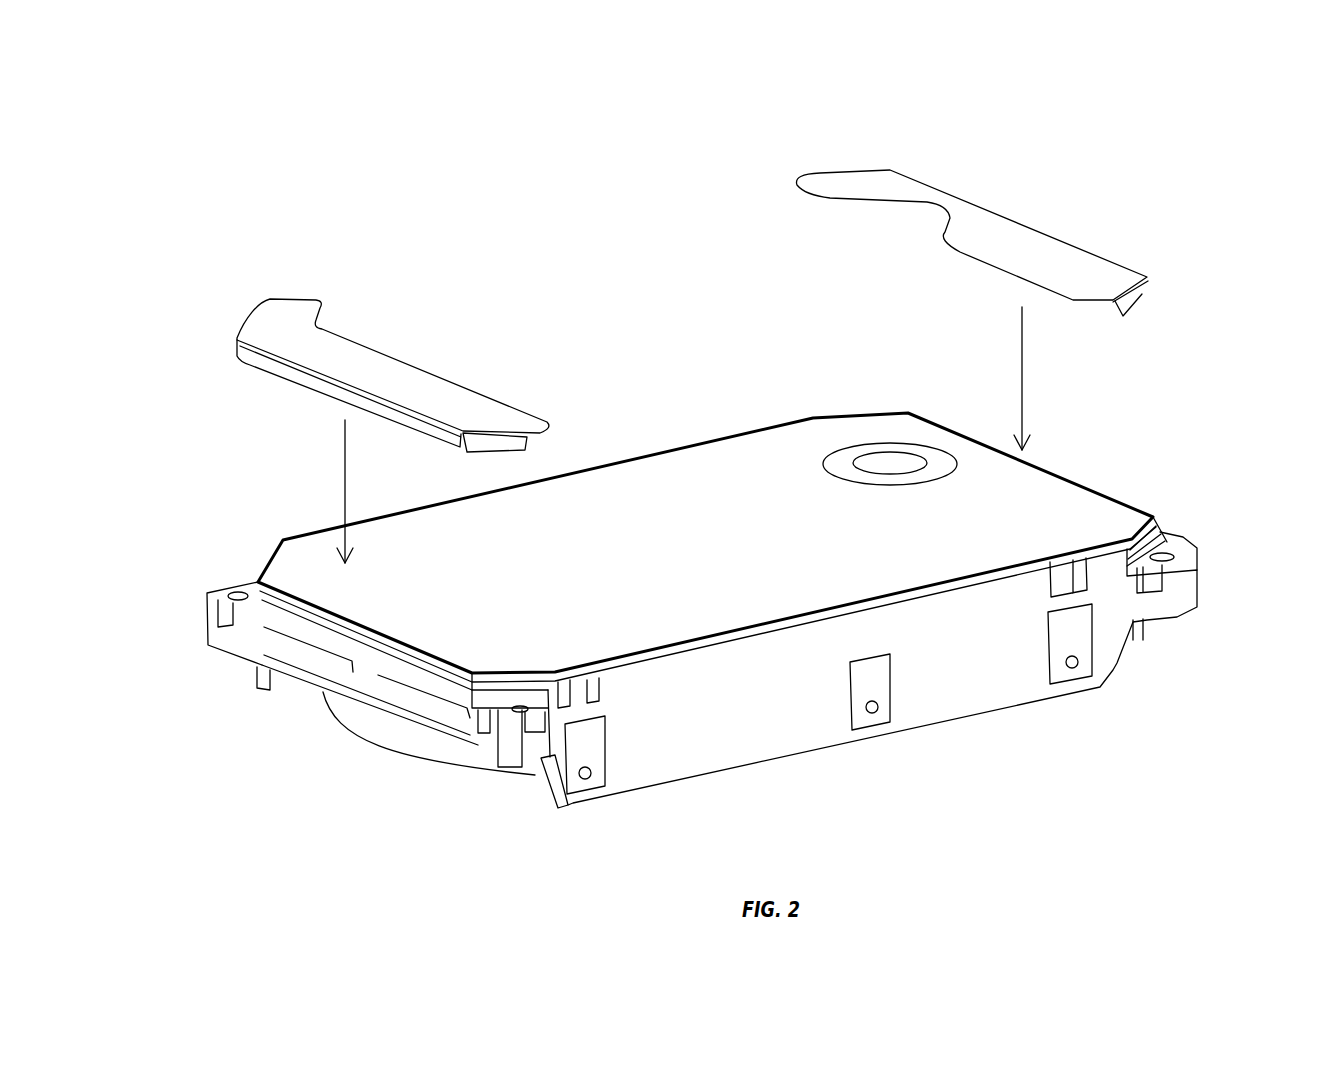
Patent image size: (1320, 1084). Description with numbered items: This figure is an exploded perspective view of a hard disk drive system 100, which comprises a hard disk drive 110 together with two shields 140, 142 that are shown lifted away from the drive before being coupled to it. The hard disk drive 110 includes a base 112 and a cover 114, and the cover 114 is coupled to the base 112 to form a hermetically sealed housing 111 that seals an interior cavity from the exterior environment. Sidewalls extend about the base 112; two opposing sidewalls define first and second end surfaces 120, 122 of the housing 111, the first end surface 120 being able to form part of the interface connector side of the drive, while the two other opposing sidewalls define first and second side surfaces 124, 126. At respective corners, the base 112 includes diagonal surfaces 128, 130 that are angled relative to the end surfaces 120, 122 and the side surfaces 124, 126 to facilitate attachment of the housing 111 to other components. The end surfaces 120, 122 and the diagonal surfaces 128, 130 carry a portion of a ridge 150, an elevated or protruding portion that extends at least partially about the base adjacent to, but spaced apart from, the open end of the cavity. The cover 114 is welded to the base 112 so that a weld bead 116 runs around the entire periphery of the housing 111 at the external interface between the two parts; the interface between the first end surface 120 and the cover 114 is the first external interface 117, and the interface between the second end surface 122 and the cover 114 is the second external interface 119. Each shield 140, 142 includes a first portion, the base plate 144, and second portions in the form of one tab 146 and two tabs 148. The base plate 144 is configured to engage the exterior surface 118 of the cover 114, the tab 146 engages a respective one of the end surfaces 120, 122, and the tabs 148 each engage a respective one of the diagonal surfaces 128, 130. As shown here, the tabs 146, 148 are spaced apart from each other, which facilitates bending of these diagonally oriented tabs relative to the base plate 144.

The hard disk drive system 100 is at (1077, 158).
The hard disk drive 110 is at (798, 410).
The housing 111 is at (1097, 690).
The base 112 is at (987, 687).
The cover 114 is at (648, 455).
The weld bead 116 is at (680, 652).
The first external interface 117 is at (333, 623).
The exterior surface of the cover 118 is at (757, 462).
The second external interface 119 is at (1167, 520).
The first end surface 120 is at (368, 662).
The second end surface 122 is at (1203, 560).
The first side surface 124 is at (640, 747).
The second side surface 126 is at (210, 590).
The diagonal surface 128 is at (495, 695).
The diagonal surface 130 is at (1180, 557).
The shield 140 is at (297, 292).
The shield 142 is at (865, 165).
The base plate 144 is at (352, 355).
The tab 146 is at (305, 375).
The tab 148 is at (487, 443).
The ridge 150 is at (1153, 517).